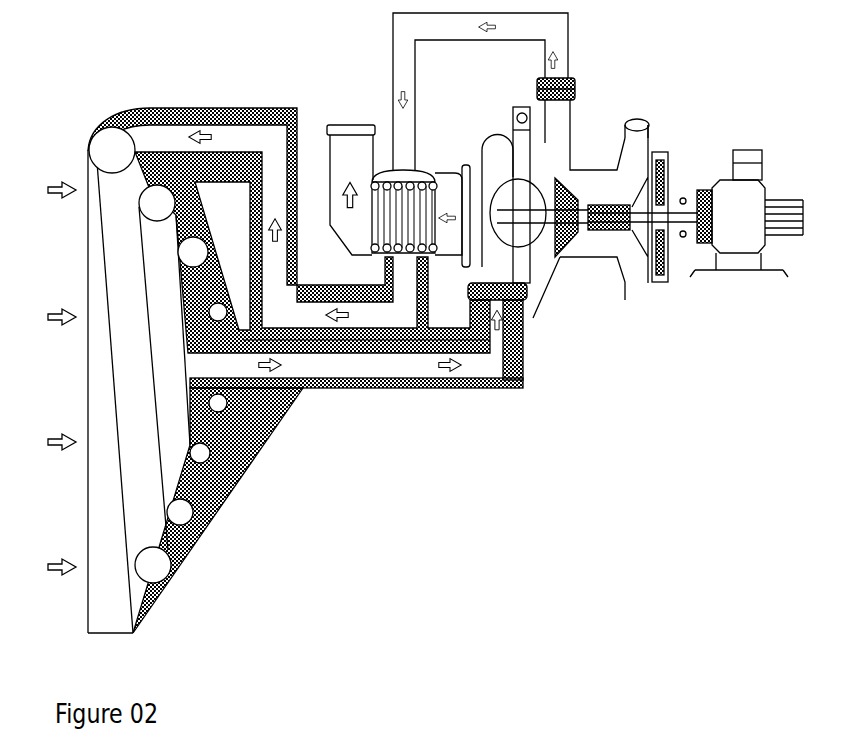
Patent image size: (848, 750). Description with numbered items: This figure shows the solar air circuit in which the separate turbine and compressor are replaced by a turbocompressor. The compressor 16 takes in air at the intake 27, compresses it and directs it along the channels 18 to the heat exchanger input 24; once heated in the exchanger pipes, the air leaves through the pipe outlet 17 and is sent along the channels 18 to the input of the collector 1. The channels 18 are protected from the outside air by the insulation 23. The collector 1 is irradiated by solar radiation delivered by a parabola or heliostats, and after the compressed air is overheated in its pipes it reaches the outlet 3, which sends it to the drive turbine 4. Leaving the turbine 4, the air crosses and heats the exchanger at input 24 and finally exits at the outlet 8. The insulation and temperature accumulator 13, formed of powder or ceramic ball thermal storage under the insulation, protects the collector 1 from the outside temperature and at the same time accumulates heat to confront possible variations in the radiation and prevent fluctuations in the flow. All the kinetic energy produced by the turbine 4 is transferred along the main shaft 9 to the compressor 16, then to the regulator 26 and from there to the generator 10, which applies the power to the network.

The collector 1 is at (87, 381).
The outlet 3 is at (417, 364).
The drive turbine 4 is at (510, 392).
The outlet 8 is at (350, 124).
The main shaft 9 is at (677, 236).
The generator 10 is at (740, 276).
The thermal storage 13 is at (200, 107).
The compressor 16 is at (558, 252).
The outlet from the pipes 17 is at (469, 284).
The channels 18 is at (262, 138).
The insulation 23 is at (249, 470).
The heat exchanger input 24 is at (432, 169).
The regulator 26 is at (657, 284).
The air intake 27 is at (650, 125).